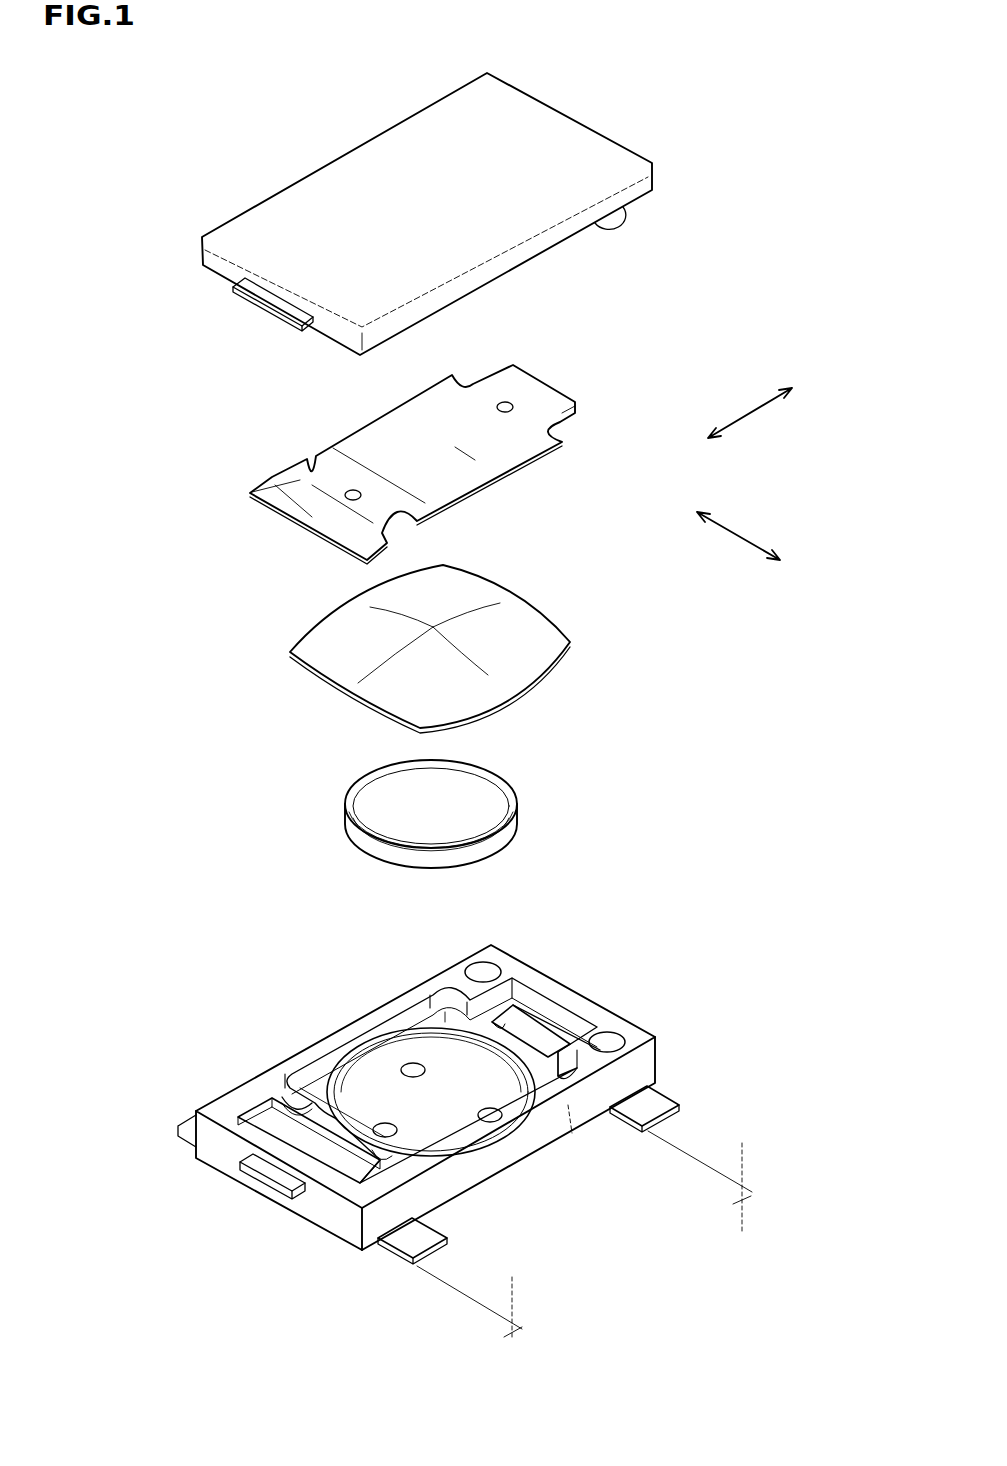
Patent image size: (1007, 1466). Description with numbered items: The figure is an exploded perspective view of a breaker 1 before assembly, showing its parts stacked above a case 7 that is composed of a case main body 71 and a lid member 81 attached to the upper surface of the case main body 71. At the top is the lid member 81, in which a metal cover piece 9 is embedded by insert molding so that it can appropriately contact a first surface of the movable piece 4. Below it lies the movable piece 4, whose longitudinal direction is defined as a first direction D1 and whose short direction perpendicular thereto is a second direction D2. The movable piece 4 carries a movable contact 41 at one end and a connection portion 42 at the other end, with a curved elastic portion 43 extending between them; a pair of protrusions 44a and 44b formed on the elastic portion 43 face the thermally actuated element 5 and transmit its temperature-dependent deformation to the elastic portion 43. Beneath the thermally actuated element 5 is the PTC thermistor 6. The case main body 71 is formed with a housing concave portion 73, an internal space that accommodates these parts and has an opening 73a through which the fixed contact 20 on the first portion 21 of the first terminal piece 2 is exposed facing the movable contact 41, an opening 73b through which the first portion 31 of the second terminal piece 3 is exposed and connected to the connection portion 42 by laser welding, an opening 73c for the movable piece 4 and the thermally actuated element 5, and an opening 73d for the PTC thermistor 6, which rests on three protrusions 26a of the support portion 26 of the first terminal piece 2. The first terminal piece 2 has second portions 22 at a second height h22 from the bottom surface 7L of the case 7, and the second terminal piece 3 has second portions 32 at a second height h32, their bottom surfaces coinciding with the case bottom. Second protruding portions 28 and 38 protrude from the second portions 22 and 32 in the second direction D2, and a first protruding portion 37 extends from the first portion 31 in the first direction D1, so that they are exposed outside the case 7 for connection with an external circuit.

The breaker 1 is at (746, 48).
The first terminal piece 2 is at (705, 1082).
The second terminal piece 3 is at (435, 1272).
The movable piece 4 is at (408, 450).
The thermally actuated element 5 is at (510, 636).
The PTC thermistor 6 is at (478, 805).
The case 7 is at (437, 684).
The cover piece 9 is at (250, 300).
The fixed contact 20 is at (540, 1025).
The first portion 21 is at (523, 1020).
The second portions 22 is at (705, 1082).
The support portion 26 is at (428, 1092).
The protrusions 26a is at (500, 1118).
The second protruding portions 28 is at (650, 1105).
The first portion 31 is at (322, 1142).
The second portions 32 is at (399, 1272).
The first protruding portion 37 is at (262, 1160).
The second protruding portions 38 is at (412, 1240).
The movable contact 41 is at (571, 422).
The connection portion 42 is at (262, 480).
The elastic portion 43 is at (463, 455).
The protrusion 44a is at (350, 490).
The protrusion 44b is at (507, 403).
The case main body 71 is at (437, 1113).
The housing concave portion 73 is at (433, 1113).
The opening 73a is at (548, 1040).
The opening 73b is at (298, 1140).
The opening 73c is at (443, 1023).
The opening 73d is at (377, 1102).
The second surface 7L is at (572, 1133).
The lid member 81 is at (399, 192).
The second height h22 is at (726, 1182).
The second height h32 is at (497, 1303).
The first direction D1 is at (754, 420).
The second direction D2 is at (738, 544).